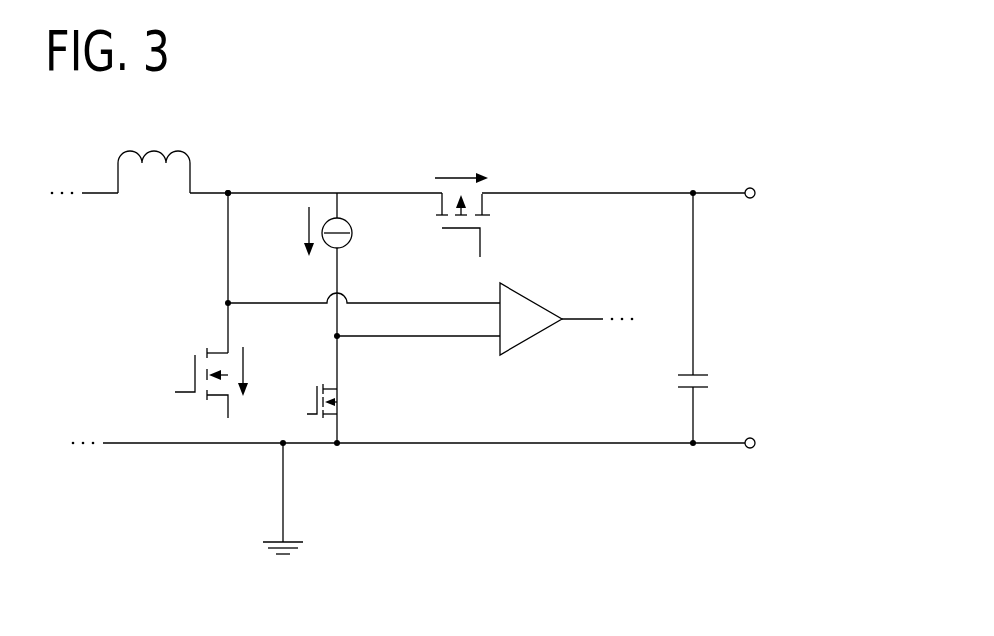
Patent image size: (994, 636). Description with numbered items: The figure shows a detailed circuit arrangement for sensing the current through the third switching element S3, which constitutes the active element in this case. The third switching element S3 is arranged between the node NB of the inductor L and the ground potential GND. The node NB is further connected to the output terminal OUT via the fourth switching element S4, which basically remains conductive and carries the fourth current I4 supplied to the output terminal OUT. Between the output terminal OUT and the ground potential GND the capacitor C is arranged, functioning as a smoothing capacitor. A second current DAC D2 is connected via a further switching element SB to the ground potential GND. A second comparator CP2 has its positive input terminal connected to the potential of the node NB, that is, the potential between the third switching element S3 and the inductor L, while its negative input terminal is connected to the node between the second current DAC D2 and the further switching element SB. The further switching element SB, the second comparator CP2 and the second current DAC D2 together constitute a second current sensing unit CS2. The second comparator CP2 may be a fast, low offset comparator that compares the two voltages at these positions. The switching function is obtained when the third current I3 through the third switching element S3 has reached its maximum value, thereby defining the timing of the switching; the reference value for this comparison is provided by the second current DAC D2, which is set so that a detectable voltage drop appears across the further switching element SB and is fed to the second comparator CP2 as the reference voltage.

The inductor L is at (168, 151).
The node NB is at (232, 191).
The fourth switching element S4 is at (485, 207).
The fourth current I4 is at (461, 165).
The output terminal OUT is at (781, 197).
The second current DAC D2 is at (350, 242).
The second comparator CP2 is at (545, 303).
The capacitor C is at (701, 318).
The third switching element S3 is at (190, 383).
The third current I3 is at (253, 371).
The further switching element SB is at (335, 402).
The second current sensing unit CS2 is at (437, 420).
The ground potential GND is at (282, 520).